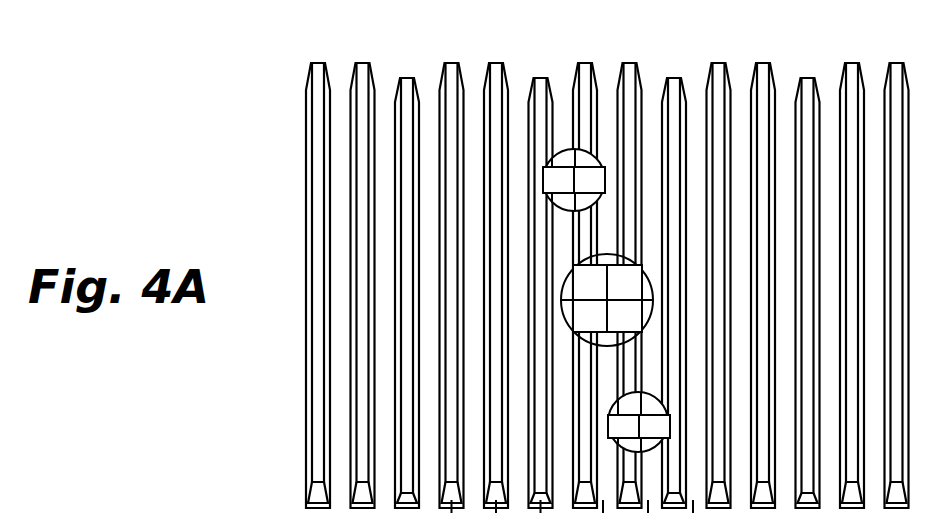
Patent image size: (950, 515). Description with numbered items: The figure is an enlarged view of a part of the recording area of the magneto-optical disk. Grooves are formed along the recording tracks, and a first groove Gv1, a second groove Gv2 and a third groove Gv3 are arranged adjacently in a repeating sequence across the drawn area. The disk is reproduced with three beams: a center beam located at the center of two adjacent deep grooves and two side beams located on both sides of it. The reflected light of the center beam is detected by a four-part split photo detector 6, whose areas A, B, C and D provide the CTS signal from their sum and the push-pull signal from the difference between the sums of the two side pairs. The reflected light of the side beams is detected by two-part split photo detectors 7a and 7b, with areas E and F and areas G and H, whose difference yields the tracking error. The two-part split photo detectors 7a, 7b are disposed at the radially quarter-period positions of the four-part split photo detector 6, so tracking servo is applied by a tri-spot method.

The four-part split photo detector 6 is at (563, 283).
The two-part split photo detector 7a is at (550, 155).
The two-part split photo detector 7b is at (617, 452).
The first groove Gv1 is at (581, 260).
The second groove Gv2 is at (625, 260).
The third groove Gv3 is at (603, 260).